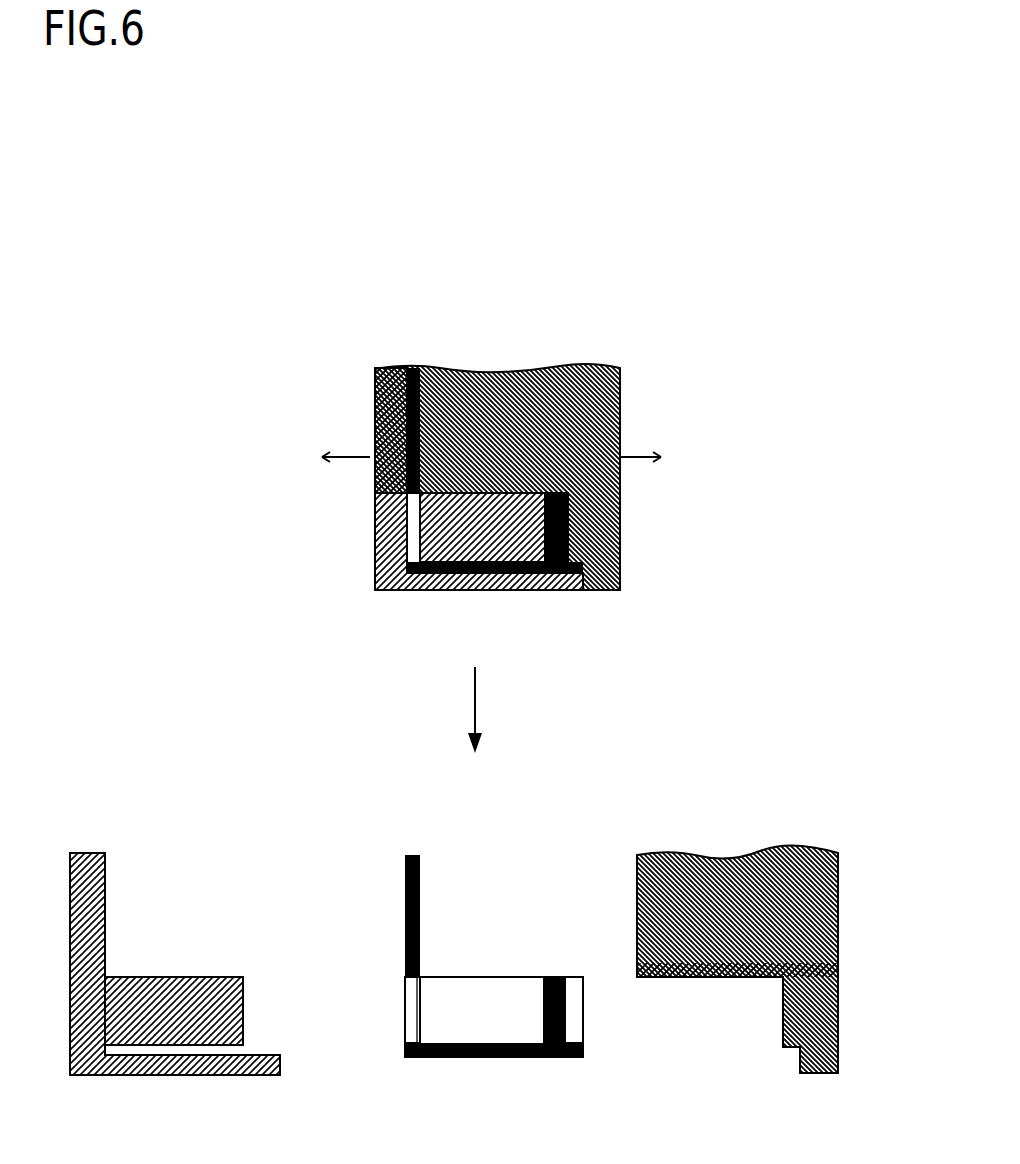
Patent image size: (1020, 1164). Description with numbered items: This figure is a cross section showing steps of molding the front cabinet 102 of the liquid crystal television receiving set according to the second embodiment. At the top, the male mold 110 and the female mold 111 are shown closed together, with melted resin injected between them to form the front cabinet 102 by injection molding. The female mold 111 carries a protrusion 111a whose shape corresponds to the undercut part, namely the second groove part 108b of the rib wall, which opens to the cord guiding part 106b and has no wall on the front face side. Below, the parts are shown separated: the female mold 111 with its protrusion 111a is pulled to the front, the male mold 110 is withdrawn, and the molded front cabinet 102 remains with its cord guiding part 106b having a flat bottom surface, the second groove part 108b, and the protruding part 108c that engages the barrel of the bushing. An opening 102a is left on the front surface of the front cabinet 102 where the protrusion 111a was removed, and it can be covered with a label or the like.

The front cabinet 102 is at (405, 920).
The opening 102a is at (405, 1015).
The cord guiding part 106b is at (483, 1005).
The second groove part 108b is at (500, 1057).
The protruding part 108c is at (560, 1057).
The male mold 110 is at (620, 412).
The female mold 111 is at (375, 403).
The protrusion 111a is at (425, 592).